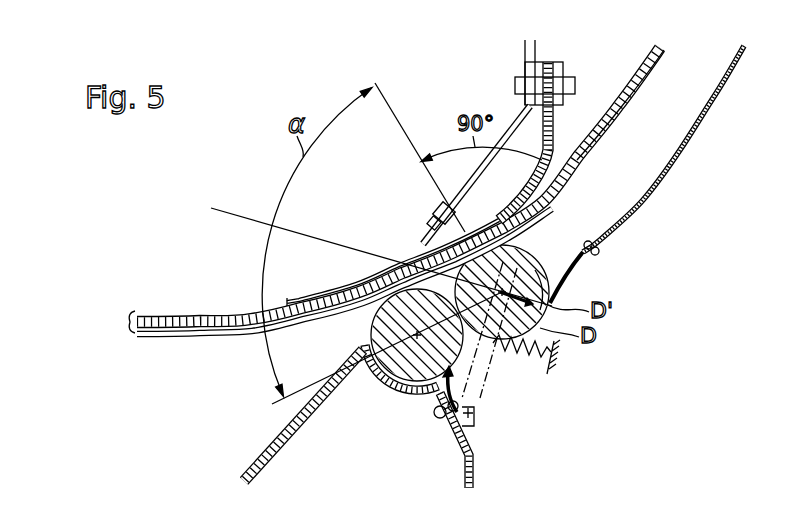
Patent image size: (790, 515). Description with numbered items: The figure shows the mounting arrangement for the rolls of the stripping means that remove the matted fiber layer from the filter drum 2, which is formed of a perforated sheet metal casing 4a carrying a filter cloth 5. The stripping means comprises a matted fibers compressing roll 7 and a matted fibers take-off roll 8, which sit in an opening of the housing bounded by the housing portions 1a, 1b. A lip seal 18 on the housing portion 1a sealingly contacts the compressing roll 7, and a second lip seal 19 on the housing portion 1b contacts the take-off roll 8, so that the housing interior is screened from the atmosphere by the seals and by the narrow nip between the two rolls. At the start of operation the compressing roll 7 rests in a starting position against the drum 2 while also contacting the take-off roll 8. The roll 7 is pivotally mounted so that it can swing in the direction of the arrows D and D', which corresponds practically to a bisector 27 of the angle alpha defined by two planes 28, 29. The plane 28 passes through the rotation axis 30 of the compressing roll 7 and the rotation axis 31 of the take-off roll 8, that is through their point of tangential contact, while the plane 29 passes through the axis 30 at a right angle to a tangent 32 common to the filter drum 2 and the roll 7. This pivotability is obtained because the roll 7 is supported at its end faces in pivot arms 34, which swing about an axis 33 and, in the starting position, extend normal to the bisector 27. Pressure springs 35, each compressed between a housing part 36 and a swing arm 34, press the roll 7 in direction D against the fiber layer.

The housing portion 1a is at (640, 200).
The housing portion 1b is at (433, 403).
The filter drum 2 is at (125, 322).
The perforated sheet metal casing 4a is at (657, 43).
The filter cloth 5 is at (668, 45).
The matted fibers compressing roll 7 is at (532, 288).
The matted fibers take-off roll 8 is at (392, 362).
The lip seal 18 is at (577, 272).
The second lip seal 19 is at (431, 154).
The bisector 27 is at (232, 212).
The plane 28 is at (302, 398).
The plane 29 is at (396, 118).
The rotation axis 30 is at (512, 272).
The rotation axis 31 is at (419, 352).
The tangent 32 is at (557, 194).
The axis 33 is at (472, 420).
The pivot arm 34 is at (488, 390).
The pressure spring 35 is at (528, 362).
The housing part 36 is at (556, 355).